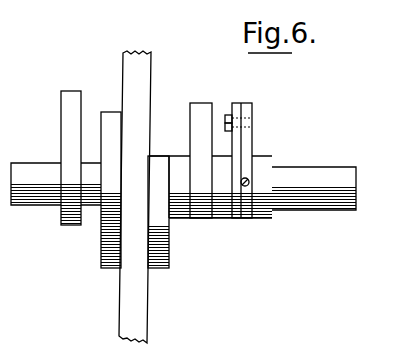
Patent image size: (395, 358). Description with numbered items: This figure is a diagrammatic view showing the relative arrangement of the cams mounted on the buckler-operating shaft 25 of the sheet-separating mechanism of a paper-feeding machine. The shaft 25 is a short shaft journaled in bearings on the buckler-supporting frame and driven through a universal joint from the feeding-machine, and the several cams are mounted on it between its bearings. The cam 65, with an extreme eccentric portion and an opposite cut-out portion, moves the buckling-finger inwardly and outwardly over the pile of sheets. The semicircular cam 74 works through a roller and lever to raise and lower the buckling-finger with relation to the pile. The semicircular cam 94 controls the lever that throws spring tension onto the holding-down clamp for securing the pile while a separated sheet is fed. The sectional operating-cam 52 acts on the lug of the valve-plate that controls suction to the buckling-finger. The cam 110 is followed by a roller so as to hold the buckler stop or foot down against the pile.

The buckler-operating shaft 25 is at (310, 171).
The sectional operating-cam 52 is at (248, 152).
The cam 65 is at (65, 188).
The semicircular cam 74 is at (101, 256).
The semicircular cam 94 is at (170, 254).
The cam 110 is at (200, 110).